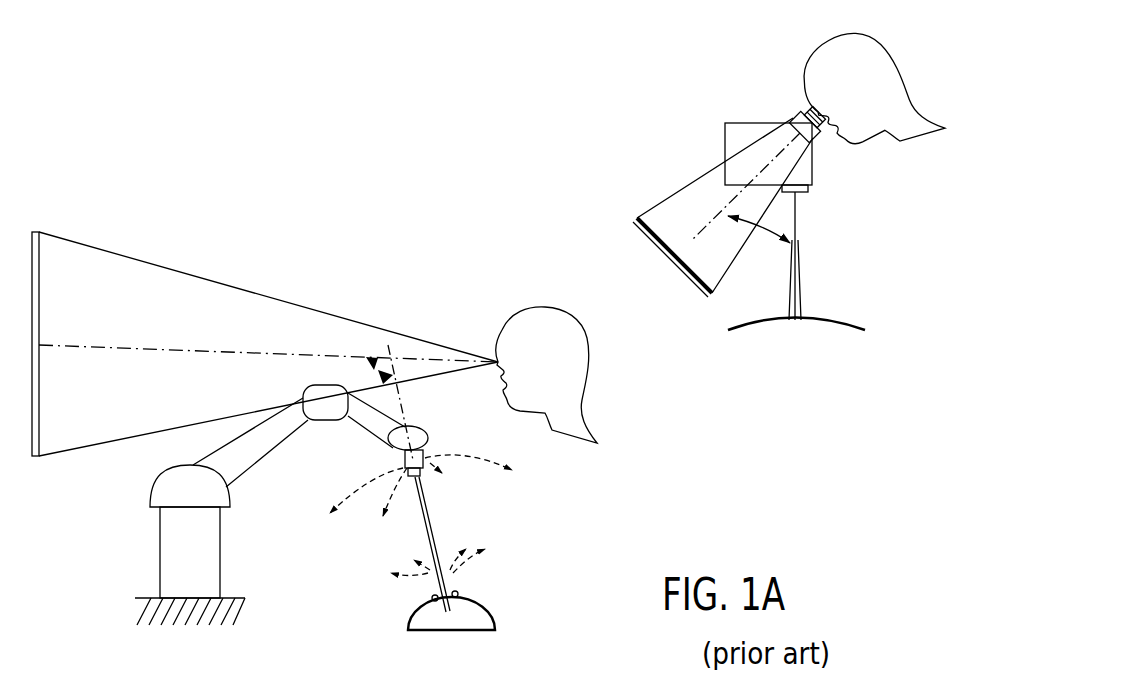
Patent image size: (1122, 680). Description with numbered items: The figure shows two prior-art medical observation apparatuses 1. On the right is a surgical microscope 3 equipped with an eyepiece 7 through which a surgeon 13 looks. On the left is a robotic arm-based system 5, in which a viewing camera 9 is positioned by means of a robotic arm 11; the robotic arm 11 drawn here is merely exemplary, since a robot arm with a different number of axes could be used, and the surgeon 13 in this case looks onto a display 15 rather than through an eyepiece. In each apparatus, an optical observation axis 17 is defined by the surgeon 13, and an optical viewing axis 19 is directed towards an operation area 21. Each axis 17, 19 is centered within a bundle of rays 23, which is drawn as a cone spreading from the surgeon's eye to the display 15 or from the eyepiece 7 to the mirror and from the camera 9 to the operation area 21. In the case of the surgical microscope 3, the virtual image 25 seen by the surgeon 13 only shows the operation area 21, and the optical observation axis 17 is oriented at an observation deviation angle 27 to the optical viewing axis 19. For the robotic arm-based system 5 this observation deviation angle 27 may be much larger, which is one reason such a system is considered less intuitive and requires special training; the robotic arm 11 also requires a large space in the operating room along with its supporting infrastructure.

The medical observation apparatus 1 is at (243, 245).
The surgical microscope 3 is at (725, 205).
The robotic arm-based system 5 is at (268, 344).
The eyepiece 7 is at (789, 112).
The viewing camera 9 is at (425, 455).
The robotic arm 11 is at (172, 548).
The surgeon 13 is at (553, 320).
The display 15 is at (38, 258).
The optical observation axis 17 is at (182, 350).
The optical viewing axis 19 is at (432, 523).
The operation area 21 is at (472, 595).
The bundle of rays 23 is at (433, 573).
The virtual image 25 is at (693, 287).
The observation deviation angle 27 is at (380, 345).